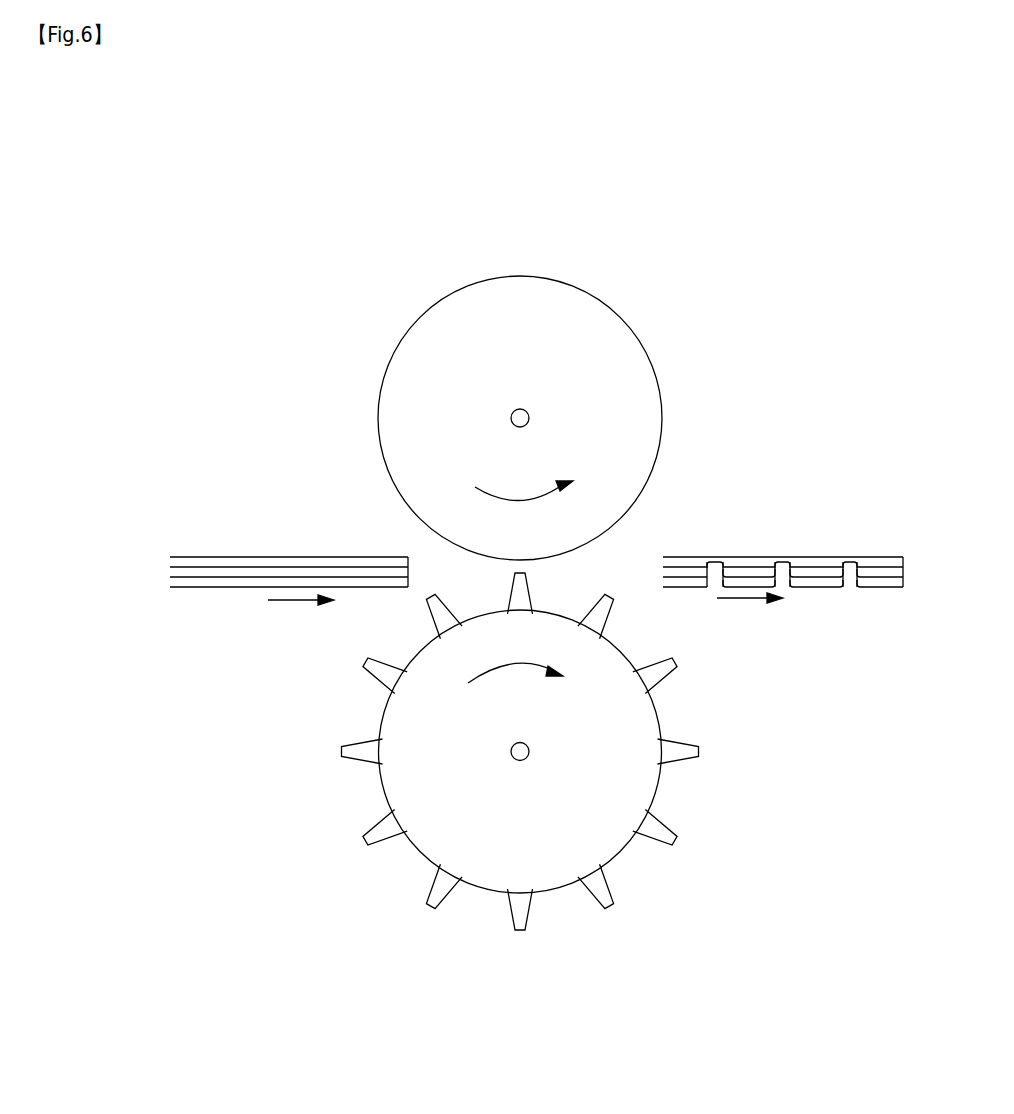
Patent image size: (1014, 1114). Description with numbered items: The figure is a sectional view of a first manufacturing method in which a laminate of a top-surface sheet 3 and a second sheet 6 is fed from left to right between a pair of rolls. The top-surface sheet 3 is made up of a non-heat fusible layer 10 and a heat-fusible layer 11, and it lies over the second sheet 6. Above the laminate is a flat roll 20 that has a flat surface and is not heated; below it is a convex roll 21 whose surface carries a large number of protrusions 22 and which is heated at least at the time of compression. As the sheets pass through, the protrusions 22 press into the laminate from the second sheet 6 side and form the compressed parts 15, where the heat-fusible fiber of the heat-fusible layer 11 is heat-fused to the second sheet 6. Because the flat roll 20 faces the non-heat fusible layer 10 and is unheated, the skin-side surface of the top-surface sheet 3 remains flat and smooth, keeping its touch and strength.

The top-surface sheet 3 is at (203, 557).
The second sheet 6 is at (200, 588).
The non-heat fusible layer 10 is at (262, 560).
The heat-fusible layer 11 is at (330, 572).
The compressed parts 15 is at (784, 588).
The flat roll 20 is at (605, 312).
The convex roll 21 is at (658, 793).
The protrusions 22 is at (377, 828).